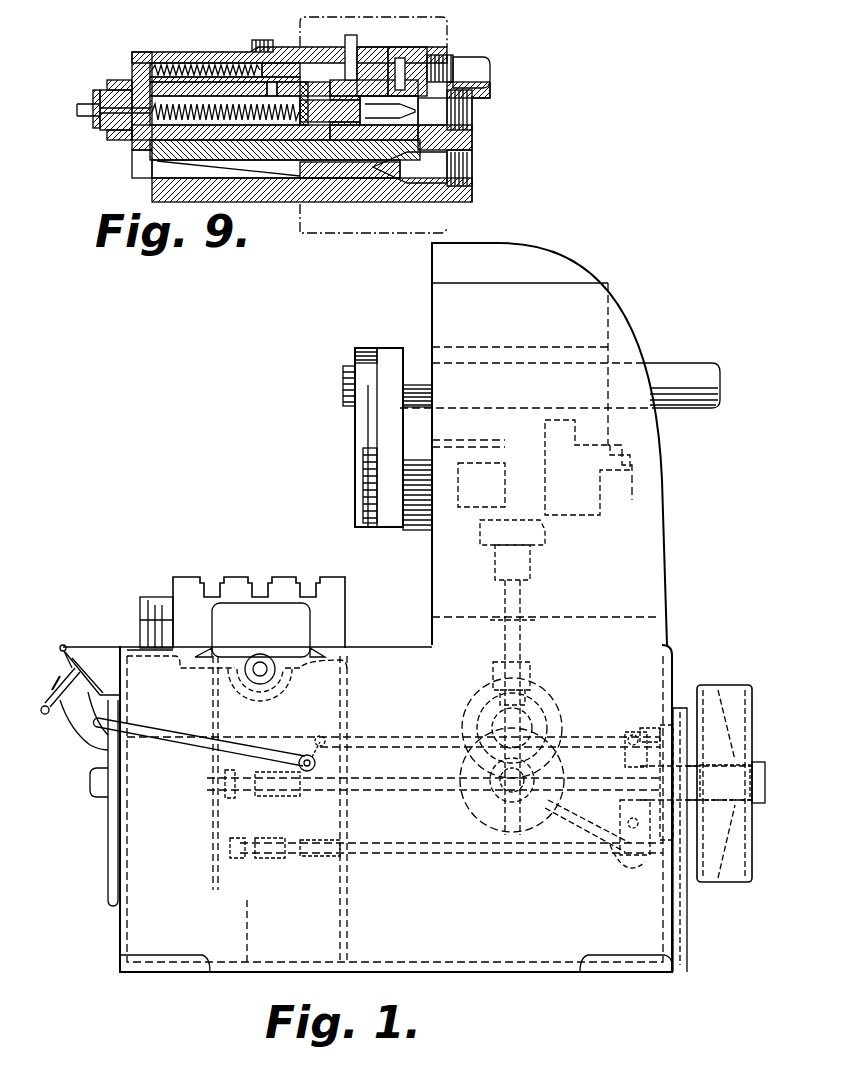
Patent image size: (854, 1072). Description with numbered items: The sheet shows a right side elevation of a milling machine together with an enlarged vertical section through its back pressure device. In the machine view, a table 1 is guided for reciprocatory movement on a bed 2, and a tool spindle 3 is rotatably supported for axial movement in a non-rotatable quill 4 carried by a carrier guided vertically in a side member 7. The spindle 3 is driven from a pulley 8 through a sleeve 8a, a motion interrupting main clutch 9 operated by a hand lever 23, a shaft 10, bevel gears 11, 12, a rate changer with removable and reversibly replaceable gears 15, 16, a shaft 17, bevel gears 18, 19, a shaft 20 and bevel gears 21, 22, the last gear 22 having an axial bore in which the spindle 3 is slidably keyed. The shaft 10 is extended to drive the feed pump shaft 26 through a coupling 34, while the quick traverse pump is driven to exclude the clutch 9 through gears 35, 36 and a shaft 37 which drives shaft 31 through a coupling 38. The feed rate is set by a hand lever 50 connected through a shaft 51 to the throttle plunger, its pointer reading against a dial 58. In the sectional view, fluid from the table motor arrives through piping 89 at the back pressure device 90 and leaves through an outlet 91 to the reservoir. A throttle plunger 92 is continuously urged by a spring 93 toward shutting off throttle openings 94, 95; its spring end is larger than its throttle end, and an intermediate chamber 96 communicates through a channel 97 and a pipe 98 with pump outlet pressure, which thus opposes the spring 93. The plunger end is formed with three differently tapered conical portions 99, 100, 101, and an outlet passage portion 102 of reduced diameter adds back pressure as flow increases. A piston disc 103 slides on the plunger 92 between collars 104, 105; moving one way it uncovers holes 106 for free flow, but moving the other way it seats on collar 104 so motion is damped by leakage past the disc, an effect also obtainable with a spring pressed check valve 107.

In FIG. 1, the table 1 is at (191, 582).
In FIG. 1, the bed 2 is at (140, 927).
In FIG. 1, the tool spindle 3 is at (362, 502).
In FIG. 1, the quill 4 is at (420, 528).
In FIG. 1, the side member 7 is at (463, 595).
In FIG. 1, the pulley 8 is at (707, 705).
In FIG. 1, the sleeve 8a is at (712, 758).
In FIG. 1, the main clutch 9 is at (645, 743).
In FIG. 1, the shaft 10 is at (322, 786).
In FIG. 1, the bevel gear 11 is at (540, 808).
In FIG. 1, the bevel gear 12 is at (470, 810).
In FIG. 1, the gear 15 is at (465, 790).
In FIG. 1, the gear 16 is at (465, 750).
In FIG. 1, the shaft 17 is at (556, 722).
In FIG. 1, the bevel gear 18 is at (470, 720).
In FIG. 1, the bevel gear 19 is at (472, 708).
In FIG. 1, the shaft 20 is at (530, 612).
In FIG. 1, the bevel gear 21 is at (535, 588).
In FIG. 1, the bevel gear 22 is at (537, 568).
In FIG. 1, the hand lever 23 is at (150, 724).
In FIG. 1, the shaft 26 is at (248, 790).
In FIG. 1, the shaft 31 is at (242, 855).
In FIG. 1, the coupling 34 is at (280, 792).
In FIG. 1, the gear 35 is at (653, 730).
In FIG. 1, the gear 36 is at (645, 868).
In FIG. 1, the shaft 37 is at (320, 850).
In FIG. 1, the coupling 38 is at (262, 852).
In FIG. 1, the hand lever 50 is at (75, 668).
In FIG. 1, the shaft 51 is at (58, 688).
In FIG. 1, the dial 58 is at (54, 702).
In FIG. 9, the piping 89 is at (468, 82).
In FIG. 9, the back pressure device 90 is at (428, 52).
In FIG. 9, the outlet 91 is at (167, 163).
In FIG. 9, the throttle plunger 92 is at (212, 96).
In FIG. 9, the spring 93 is at (133, 143).
In FIG. 9, the throttle opening 94 is at (383, 68).
In FIG. 9, the throttle opening 95 is at (330, 150).
In FIG. 9, the chamber 96 is at (308, 140).
In FIG. 9, the channel 97 is at (350, 73).
In FIG. 9, the pipe 98 is at (350, 60).
In FIG. 9, the tapered conical end portion 99 is at (316, 140).
In FIG. 9, the tapered conical end portion 100 is at (432, 111).
In FIG. 9, the tapered conical end portion 101 is at (446, 110).
In FIG. 9, the outlet passage portion 102 is at (322, 150).
In FIG. 9, the piston disc 103 is at (270, 150).
In FIG. 9, the collar 104 is at (283, 150).
In FIG. 9, the collar 105 is at (255, 150).
In FIG. 9, the hole 106 is at (295, 150).
In FIG. 9, the spring pressed check valve 107 is at (270, 66).